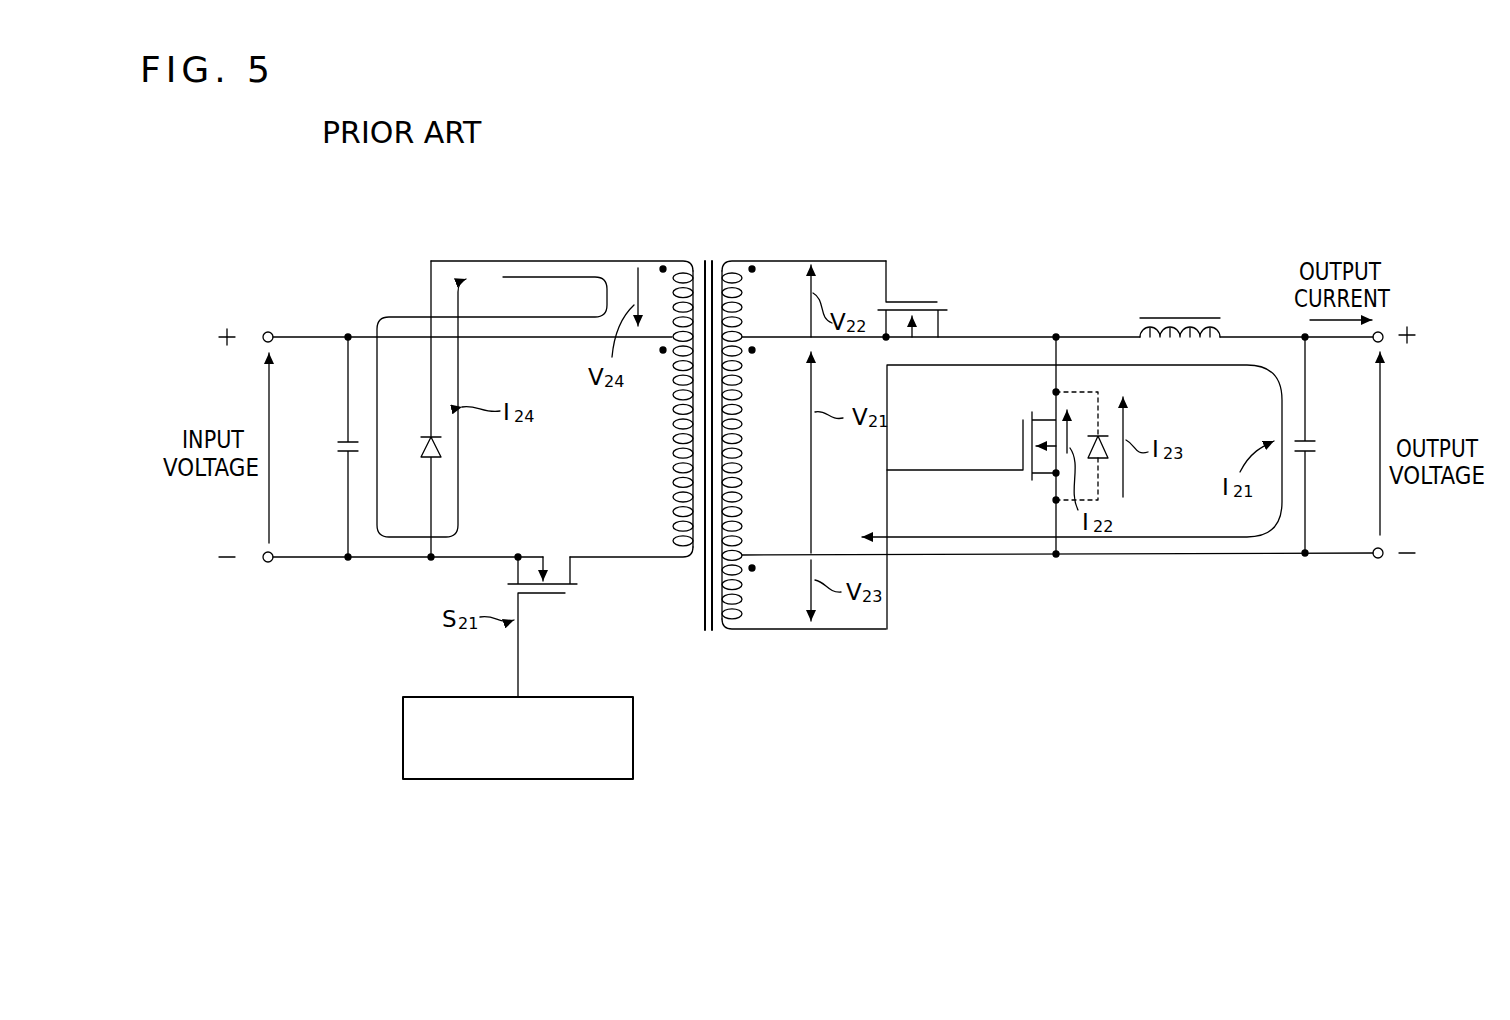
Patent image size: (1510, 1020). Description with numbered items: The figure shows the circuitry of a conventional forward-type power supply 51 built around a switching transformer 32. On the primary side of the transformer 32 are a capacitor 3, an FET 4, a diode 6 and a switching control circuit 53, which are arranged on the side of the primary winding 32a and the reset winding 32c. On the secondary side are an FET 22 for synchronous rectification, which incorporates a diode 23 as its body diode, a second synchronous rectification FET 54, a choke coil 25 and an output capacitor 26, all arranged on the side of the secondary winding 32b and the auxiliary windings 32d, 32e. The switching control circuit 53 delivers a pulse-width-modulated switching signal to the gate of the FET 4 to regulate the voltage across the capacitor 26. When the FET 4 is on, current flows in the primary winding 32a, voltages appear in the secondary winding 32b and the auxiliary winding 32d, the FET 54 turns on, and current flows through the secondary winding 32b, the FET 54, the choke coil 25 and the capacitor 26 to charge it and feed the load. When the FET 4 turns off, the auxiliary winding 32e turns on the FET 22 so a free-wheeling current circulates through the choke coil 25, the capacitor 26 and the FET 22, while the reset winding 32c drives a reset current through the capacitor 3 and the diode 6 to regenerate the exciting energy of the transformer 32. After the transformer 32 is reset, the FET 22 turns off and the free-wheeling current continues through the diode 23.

The forward-type power supply 51 is at (357, 254).
The capacitor 3 is at (345, 440).
The FET 4 is at (548, 596).
The diode 6 is at (428, 436).
The FET for use in synchronous rectification 22 is at (1043, 420).
The diode 23 is at (1100, 462).
The choke coil 25 is at (1208, 317).
The capacitor 26 is at (1312, 442).
The transformer 32 is at (704, 254).
The primary winding 32a is at (676, 543).
The secondary winding 32b is at (745, 465).
The reset winding 32c is at (672, 290).
The auxiliary winding 32d is at (742, 290).
The auxiliary winding 32e is at (742, 615).
The switching control circuit 53 is at (634, 738).
The FET for use in synchronous rectification 54 is at (925, 301).